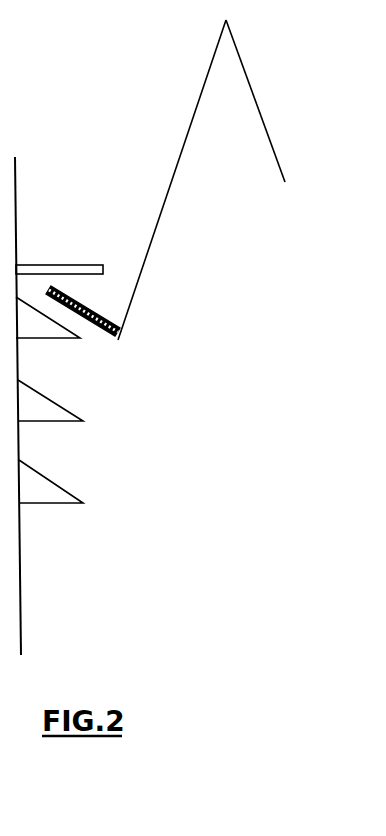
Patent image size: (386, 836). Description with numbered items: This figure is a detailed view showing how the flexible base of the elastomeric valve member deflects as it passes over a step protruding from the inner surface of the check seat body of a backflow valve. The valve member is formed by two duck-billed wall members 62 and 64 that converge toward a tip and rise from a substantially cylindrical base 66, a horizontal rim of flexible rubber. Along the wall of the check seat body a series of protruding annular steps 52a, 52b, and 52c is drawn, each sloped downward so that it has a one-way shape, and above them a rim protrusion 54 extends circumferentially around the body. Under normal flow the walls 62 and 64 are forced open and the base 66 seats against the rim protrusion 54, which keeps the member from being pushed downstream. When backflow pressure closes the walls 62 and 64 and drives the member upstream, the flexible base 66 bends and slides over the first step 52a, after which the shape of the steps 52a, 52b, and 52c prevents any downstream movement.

The rim protrusion 54 is at (77, 265).
The cylindrical base 66 is at (105, 318).
The duck-billed wall member 62 is at (202, 90).
The duck-billed wall member 64 is at (252, 85).
The protruding annular step 52a is at (58, 341).
The protruding annular step 52b is at (57, 427).
The protruding annular step 52c is at (58, 507).